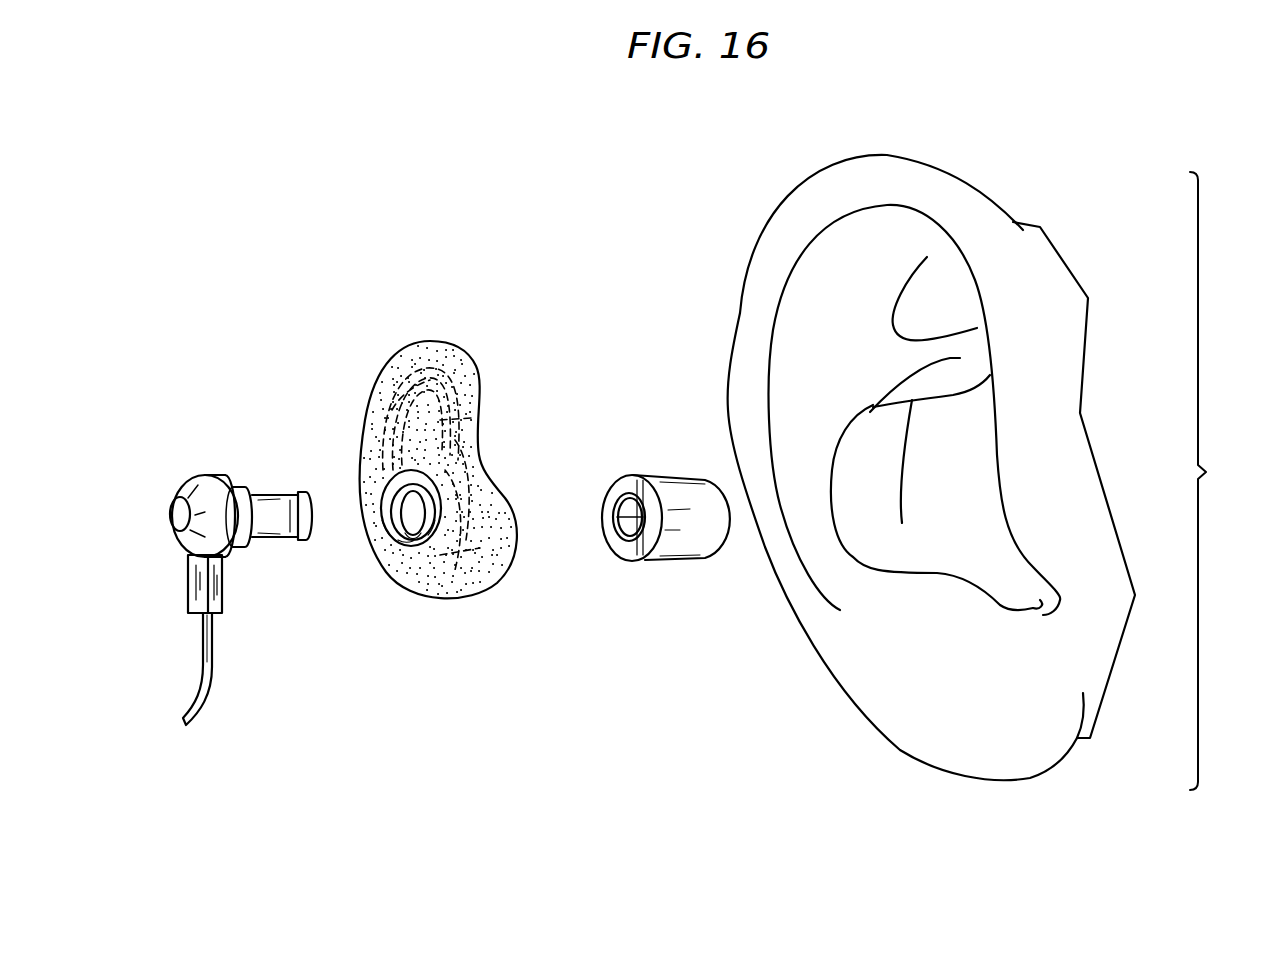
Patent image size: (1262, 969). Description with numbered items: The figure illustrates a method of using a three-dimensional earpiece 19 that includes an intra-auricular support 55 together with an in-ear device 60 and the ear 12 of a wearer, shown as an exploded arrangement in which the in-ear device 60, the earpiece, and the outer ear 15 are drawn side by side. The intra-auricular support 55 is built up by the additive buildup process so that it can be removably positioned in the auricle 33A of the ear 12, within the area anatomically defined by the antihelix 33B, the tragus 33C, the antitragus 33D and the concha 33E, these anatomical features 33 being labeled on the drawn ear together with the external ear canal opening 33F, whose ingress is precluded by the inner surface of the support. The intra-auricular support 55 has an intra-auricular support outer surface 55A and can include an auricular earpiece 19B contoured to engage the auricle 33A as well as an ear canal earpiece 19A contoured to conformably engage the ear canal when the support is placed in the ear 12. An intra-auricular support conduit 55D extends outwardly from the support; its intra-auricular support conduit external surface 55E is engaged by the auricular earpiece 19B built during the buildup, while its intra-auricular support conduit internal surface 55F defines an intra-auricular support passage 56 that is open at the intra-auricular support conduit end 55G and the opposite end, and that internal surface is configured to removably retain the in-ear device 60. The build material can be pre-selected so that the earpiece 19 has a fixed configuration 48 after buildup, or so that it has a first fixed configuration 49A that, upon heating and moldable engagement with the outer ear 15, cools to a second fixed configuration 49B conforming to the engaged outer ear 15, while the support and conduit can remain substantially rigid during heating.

The ear 12 is at (981, 454).
The outer ear 15 is at (841, 266).
The three-dimensional earpiece 19 is at (478, 488).
The ear canal earpiece 19A is at (657, 461).
The auricular earpiece 19B is at (515, 523).
The anatomical features 33 is at (1082, 481).
The auricle 33A is at (930, 315).
The antihelix 33B is at (950, 358).
The tragus 33C is at (1017, 507).
The antitragus 33D is at (930, 597).
The concha 33E is at (1020, 590).
The external ear canal opening 33F is at (1033, 610).
The fixed configuration 48 is at (515, 499).
The first fixed configuration 49A is at (438, 469).
The second fixed configuration 49B is at (503, 580).
The intra-auricular support 55 is at (478, 380).
The intra-auricular support outer surface 55A is at (384, 404).
The intra-auricular support conduit 55D is at (395, 550).
The intra-auricular support conduit external surface 55E is at (418, 550).
The intra-auricular support conduit internal surface 55F is at (430, 550).
The intra-auricular support conduit end 55G is at (378, 543).
The intra-auricular support passage 56 is at (422, 508).
The in-ear device 60 is at (194, 466).